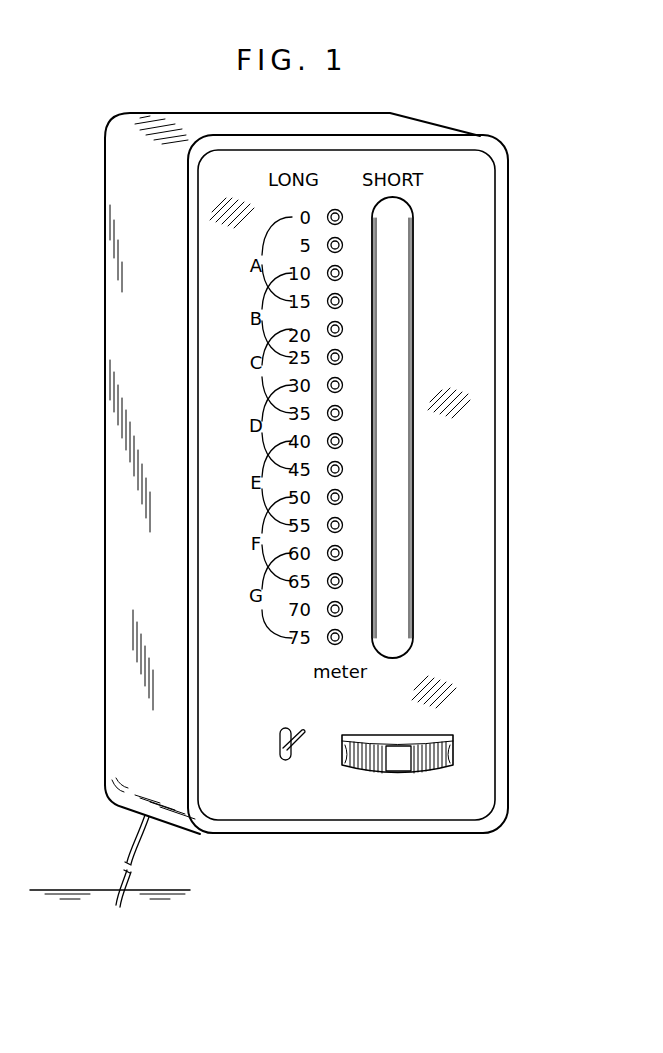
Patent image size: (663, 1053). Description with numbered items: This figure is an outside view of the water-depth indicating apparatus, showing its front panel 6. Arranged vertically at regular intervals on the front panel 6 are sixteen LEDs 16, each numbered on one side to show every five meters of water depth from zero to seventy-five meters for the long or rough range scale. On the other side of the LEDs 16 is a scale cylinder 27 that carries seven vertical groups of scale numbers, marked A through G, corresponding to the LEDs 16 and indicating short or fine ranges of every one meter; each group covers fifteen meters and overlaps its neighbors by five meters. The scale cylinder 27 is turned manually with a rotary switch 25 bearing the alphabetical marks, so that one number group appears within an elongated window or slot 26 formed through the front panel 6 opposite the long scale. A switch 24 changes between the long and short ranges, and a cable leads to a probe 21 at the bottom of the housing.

The front panel 6 is at (455, 350).
The LEDs 16 is at (343, 525).
The probe / sensor 21 is at (110, 878).
The switch 24 is at (303, 742).
The rotary switch 25 is at (405, 770).
The elongated window or slot 26 is at (413, 268).
The scale cylinder 27 is at (405, 597).